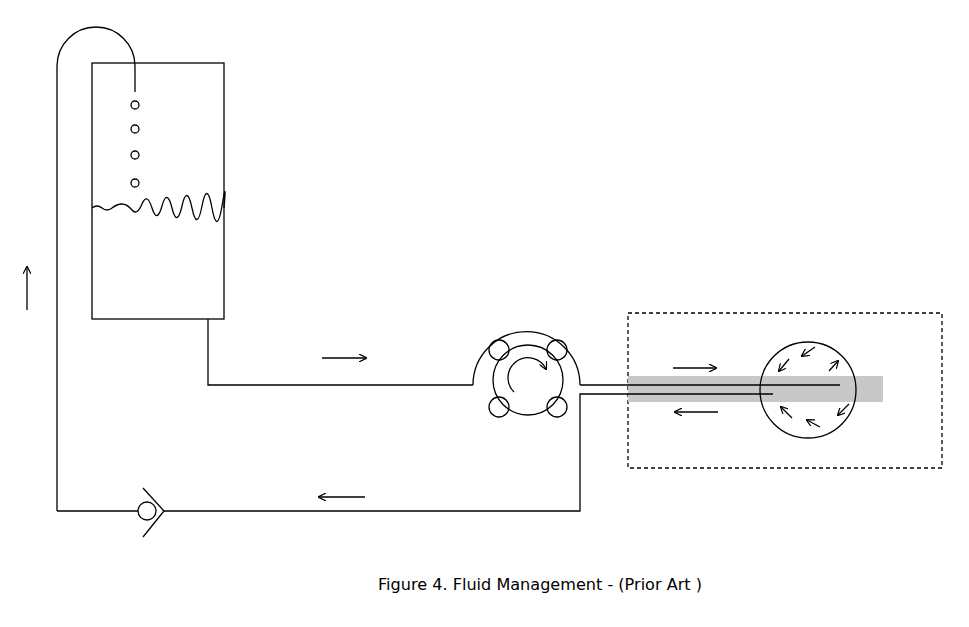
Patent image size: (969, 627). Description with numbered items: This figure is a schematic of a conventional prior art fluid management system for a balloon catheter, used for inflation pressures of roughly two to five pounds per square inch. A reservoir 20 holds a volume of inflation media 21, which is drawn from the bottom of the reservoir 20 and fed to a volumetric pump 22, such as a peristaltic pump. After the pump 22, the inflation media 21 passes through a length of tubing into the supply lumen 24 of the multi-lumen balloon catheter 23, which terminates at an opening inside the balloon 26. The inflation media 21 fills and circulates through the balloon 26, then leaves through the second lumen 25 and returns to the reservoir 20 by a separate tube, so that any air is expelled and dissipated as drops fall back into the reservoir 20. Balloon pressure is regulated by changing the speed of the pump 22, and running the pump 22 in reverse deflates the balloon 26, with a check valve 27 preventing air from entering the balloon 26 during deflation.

The reservoir 20 is at (224, 171).
The inflation media 21 is at (191, 267).
The volumetric pump 22 is at (523, 349).
The balloon catheter 23 is at (785, 374).
The supply lumen 24 is at (652, 385).
The second lumen 25 is at (645, 398).
The balloon 26 is at (845, 353).
The check valve 27 is at (164, 530).